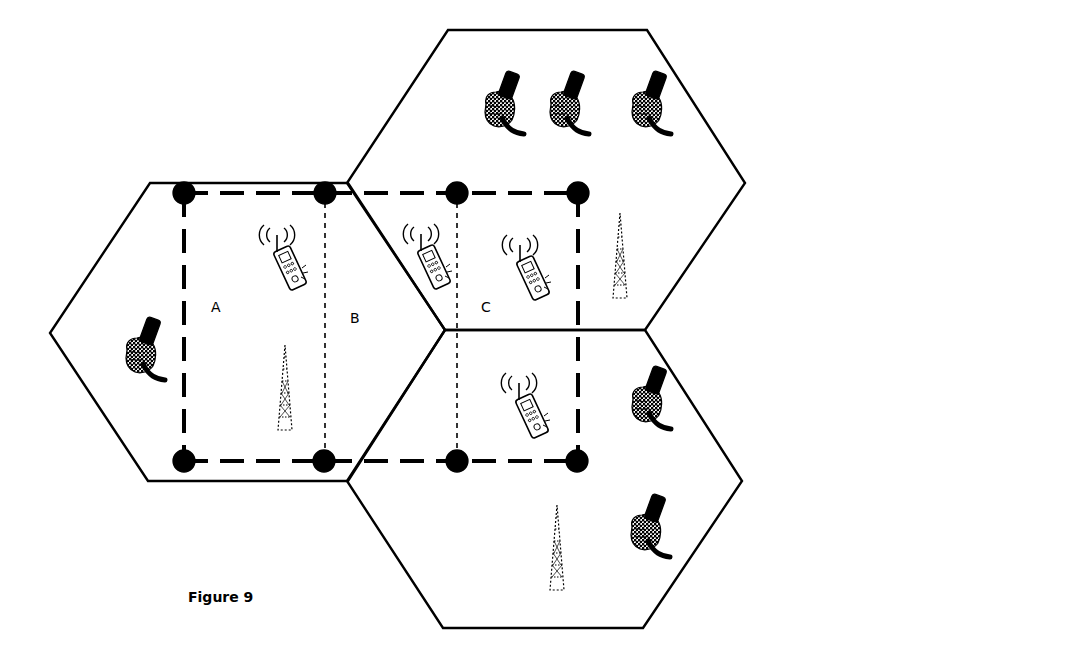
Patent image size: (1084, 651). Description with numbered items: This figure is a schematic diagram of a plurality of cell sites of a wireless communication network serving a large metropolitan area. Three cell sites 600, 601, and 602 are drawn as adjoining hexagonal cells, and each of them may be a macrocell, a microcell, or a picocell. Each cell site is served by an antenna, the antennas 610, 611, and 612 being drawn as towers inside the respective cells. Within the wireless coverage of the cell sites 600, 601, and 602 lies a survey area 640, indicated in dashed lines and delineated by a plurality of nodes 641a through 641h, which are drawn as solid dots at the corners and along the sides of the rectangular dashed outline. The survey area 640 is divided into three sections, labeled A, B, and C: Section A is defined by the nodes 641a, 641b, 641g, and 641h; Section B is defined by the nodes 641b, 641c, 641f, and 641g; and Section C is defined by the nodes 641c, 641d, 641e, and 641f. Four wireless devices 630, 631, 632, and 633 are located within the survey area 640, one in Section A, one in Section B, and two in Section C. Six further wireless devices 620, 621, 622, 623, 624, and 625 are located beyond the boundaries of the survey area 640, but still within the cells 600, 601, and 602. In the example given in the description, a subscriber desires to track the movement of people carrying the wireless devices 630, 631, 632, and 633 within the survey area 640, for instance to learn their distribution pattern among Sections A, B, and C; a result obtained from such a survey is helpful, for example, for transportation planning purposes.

The cell site 600 is at (723, 212).
The cell site 601 is at (725, 510).
The cell site 602 is at (68, 302).
The antenna 610 is at (622, 242).
The antenna 611 is at (555, 565).
The antenna 612 is at (282, 412).
The wireless device 620 is at (505, 75).
The wireless device 621 is at (581, 75).
The wireless device 622 is at (660, 75).
The wireless device 623 is at (152, 325).
The wireless device 624 is at (657, 375).
The wireless device 625 is at (657, 505).
The wireless device 630 is at (284, 228).
The wireless device 631 is at (430, 232).
The wireless device 632 is at (523, 240).
The wireless device 633 is at (522, 375).
The survey area 640 is at (380, 187).
The node 641a is at (180, 183).
The node 641b is at (323, 183).
The node 641c is at (451, 185).
The node 641d is at (588, 189).
The node 641e is at (588, 459).
The node 641f is at (450, 467).
The node 641g is at (315, 466).
The node 641h is at (173, 464).